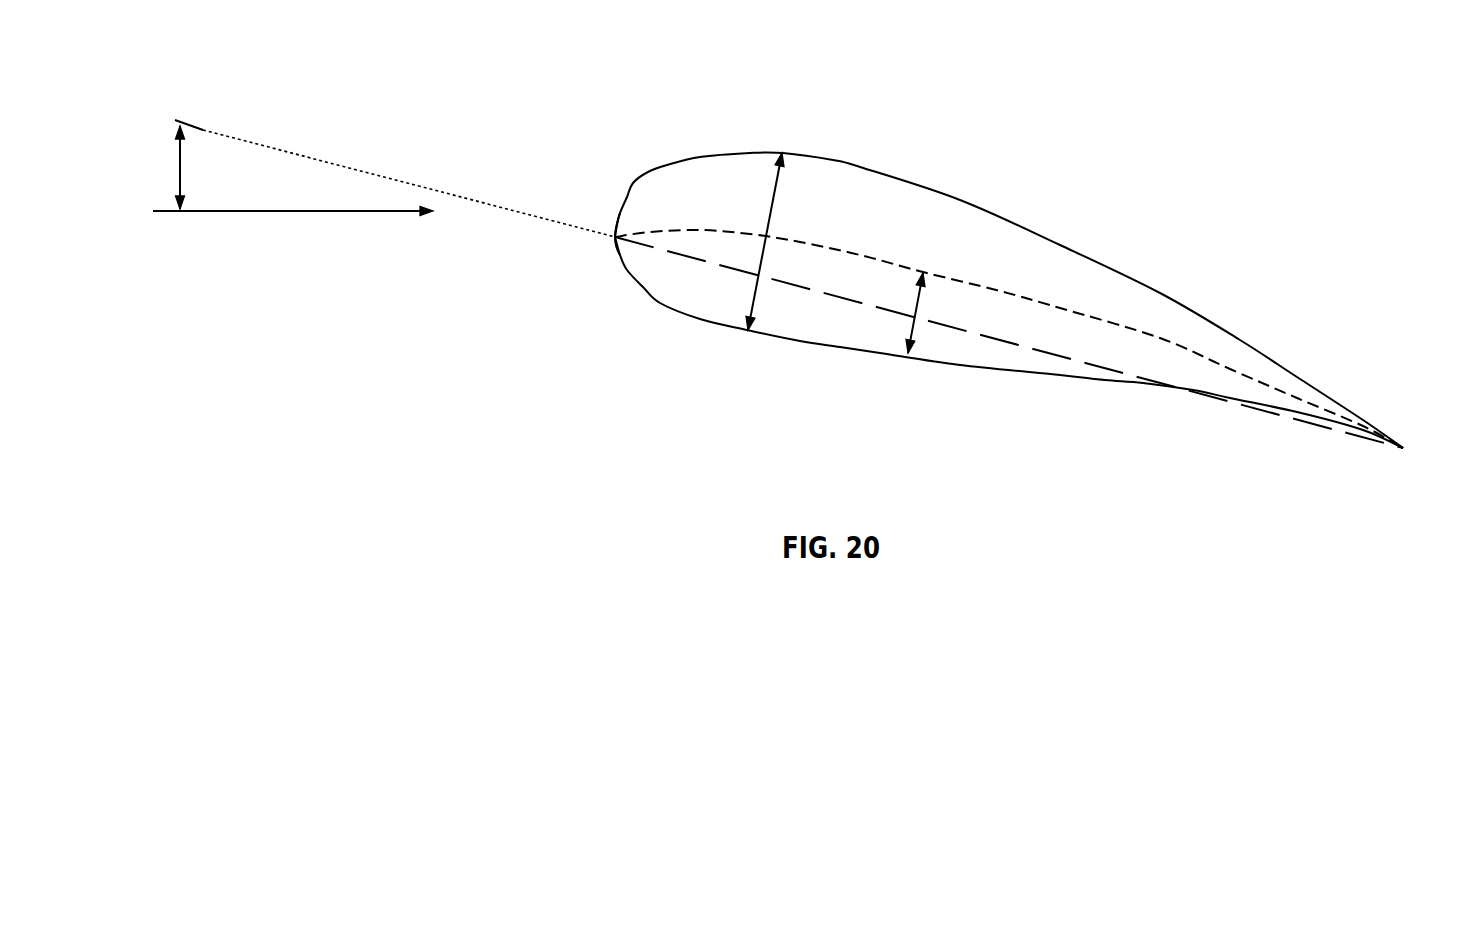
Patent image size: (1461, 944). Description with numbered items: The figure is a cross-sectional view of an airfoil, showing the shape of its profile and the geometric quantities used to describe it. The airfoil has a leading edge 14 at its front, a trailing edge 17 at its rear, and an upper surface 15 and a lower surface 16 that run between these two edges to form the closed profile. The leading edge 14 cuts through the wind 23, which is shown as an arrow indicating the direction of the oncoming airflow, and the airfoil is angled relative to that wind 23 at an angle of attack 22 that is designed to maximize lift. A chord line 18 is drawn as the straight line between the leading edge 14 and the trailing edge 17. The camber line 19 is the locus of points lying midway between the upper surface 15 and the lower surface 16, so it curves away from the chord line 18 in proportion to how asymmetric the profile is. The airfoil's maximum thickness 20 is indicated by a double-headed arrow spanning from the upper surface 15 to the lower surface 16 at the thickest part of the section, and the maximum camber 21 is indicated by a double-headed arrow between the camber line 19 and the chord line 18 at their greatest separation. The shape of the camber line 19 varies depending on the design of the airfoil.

The leading edge 14 is at (615, 238).
The upper surface 15 is at (1088, 255).
The lower surface 16 is at (1105, 380).
The trailing edge 17 is at (1405, 448).
The chord line 18 is at (682, 255).
The camber line 19 is at (835, 246).
The maximum thickness 20 is at (753, 292).
The maximum camber 21 is at (913, 335).
The angle of attack 22 is at (257, 163).
The wind 23 is at (268, 213).